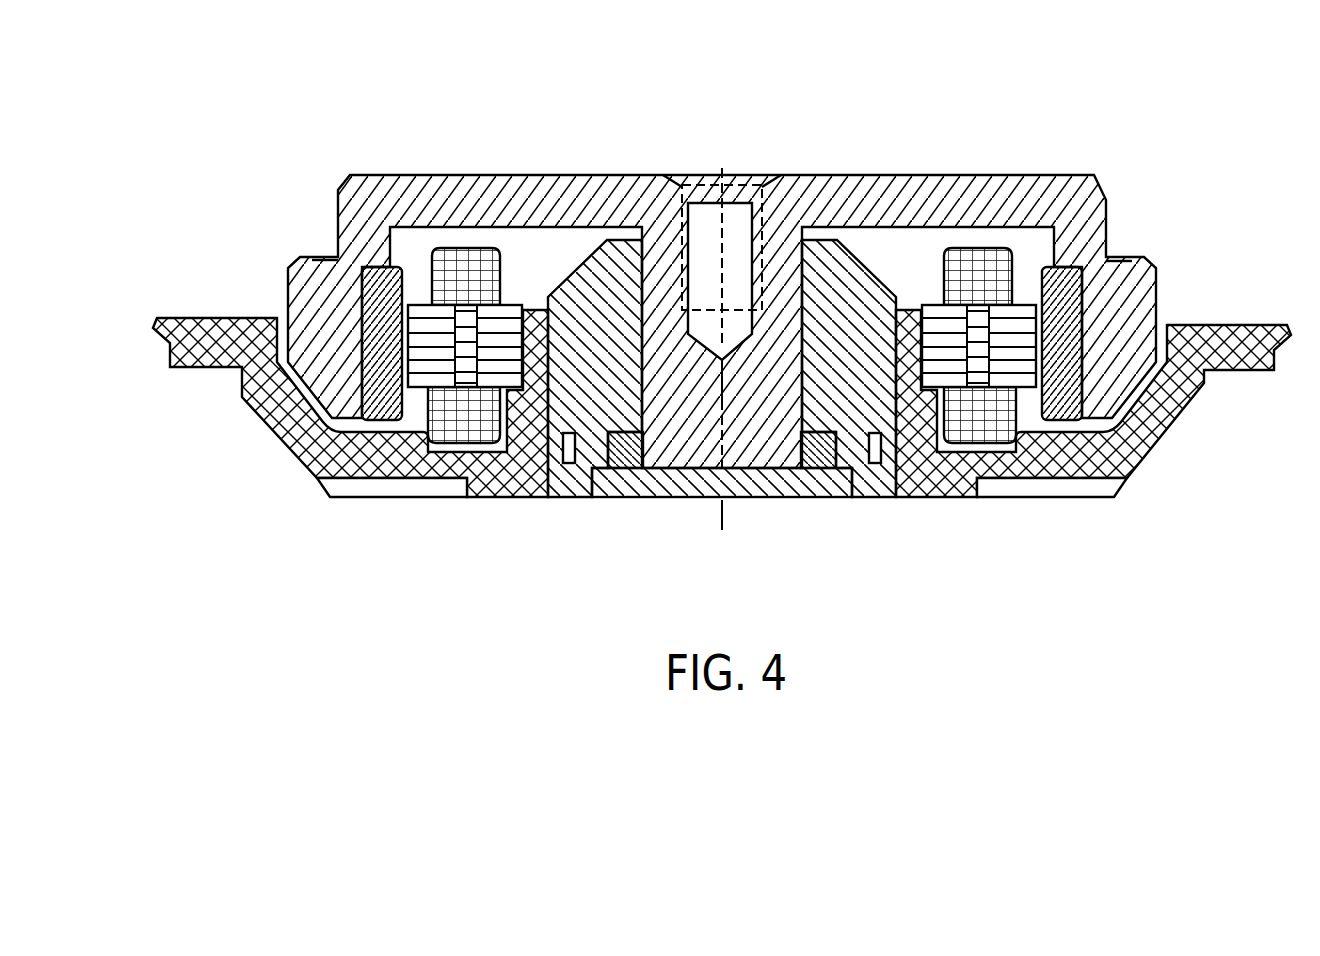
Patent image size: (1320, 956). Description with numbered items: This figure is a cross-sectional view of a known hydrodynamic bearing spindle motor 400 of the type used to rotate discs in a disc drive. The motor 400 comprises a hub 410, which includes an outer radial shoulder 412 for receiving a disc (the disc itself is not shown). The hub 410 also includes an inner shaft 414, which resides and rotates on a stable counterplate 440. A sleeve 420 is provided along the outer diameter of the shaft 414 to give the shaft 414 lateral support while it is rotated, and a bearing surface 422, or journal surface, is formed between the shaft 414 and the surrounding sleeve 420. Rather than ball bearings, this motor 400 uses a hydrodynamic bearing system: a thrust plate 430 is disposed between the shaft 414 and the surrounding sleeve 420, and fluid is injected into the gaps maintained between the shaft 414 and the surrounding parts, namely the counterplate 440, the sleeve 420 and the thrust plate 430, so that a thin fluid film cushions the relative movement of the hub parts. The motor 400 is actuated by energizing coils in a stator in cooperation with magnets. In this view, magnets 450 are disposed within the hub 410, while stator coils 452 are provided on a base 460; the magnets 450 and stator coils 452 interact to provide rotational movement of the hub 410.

The motor 400 is at (722, 303).
The hub 410 is at (330, 205).
The outer radial shoulder 412 is at (323, 254).
The inner shaft 414 is at (764, 250).
The sleeve 420 is at (852, 287).
The bearing surface 422 is at (608, 258).
The thrust plate 430 is at (627, 455).
The counterplate 440 is at (800, 470).
The magnets 450 is at (382, 400).
The stator coils 452 is at (1016, 318).
The base 460 is at (472, 456).